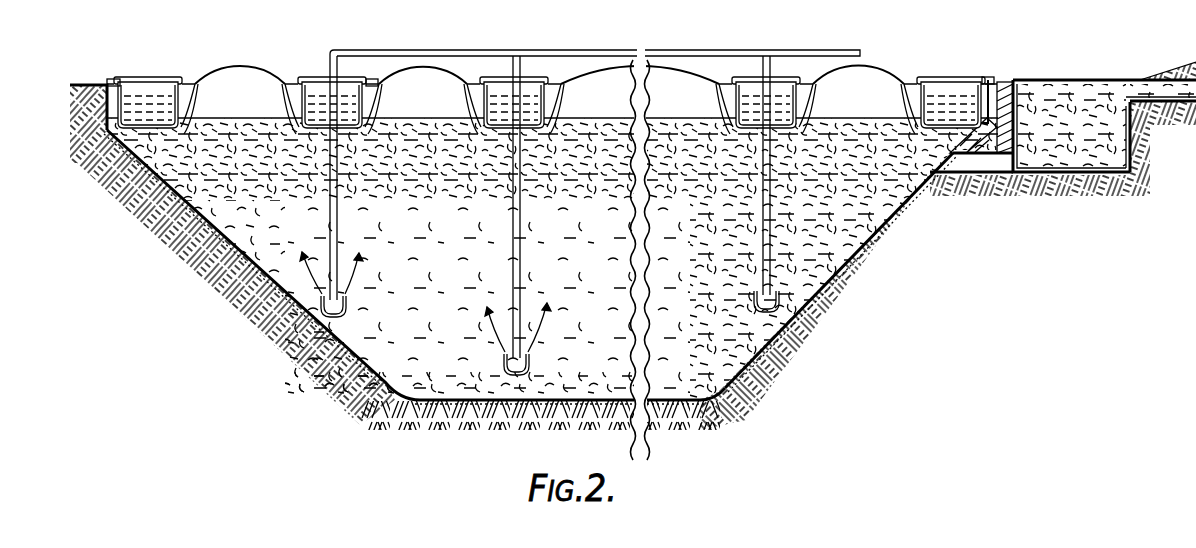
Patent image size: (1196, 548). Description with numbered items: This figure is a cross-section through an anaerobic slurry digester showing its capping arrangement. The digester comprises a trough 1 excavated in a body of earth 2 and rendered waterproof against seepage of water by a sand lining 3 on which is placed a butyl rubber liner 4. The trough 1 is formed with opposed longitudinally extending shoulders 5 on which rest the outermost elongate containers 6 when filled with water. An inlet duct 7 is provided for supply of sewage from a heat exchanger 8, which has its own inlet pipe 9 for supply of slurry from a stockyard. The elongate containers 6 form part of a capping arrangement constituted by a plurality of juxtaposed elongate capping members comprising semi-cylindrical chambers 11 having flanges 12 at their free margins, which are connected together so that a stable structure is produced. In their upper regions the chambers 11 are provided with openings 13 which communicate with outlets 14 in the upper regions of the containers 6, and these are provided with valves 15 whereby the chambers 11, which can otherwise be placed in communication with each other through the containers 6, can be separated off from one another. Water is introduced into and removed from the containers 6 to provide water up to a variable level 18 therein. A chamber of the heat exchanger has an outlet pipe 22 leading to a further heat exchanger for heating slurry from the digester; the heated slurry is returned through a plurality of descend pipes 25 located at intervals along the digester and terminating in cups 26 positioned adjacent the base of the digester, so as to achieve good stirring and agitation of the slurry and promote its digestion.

The trough 1 is at (435, 399).
The body of earth 2 is at (290, 348).
The sand lining 3 is at (905, 218).
The butyl rubber liner 4 is at (870, 250).
The shoulders 5 is at (106, 150).
The elongate containers 6 is at (139, 78).
The inlet duct 7 is at (980, 174).
The heat exchanger 8 is at (1137, 155).
The inlet pipe 9 is at (1150, 88).
The semi-cylindrical chambers 11 is at (244, 70).
The flanges 12 is at (187, 118).
The openings 13 is at (196, 83).
The outlets 14 is at (114, 79).
The valves 15 is at (112, 84).
The variable level 18 is at (238, 118).
The outlet pipe 22 is at (860, 52).
The descend pipes 25 is at (338, 228).
The cups 26 is at (347, 304).